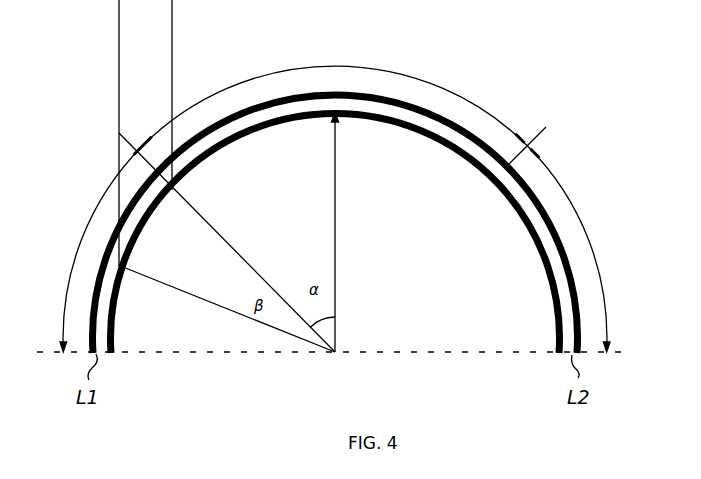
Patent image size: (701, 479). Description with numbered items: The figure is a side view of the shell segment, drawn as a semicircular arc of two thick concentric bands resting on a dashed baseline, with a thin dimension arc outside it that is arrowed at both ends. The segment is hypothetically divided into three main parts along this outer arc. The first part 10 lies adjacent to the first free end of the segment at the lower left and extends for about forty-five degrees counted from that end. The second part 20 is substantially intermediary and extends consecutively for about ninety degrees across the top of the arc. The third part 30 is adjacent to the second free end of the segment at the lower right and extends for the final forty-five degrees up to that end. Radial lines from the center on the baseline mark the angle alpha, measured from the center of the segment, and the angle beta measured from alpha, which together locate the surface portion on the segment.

The first part 10 is at (83, 249).
The second part 20 is at (335, 95).
The third part 30 is at (575, 249).